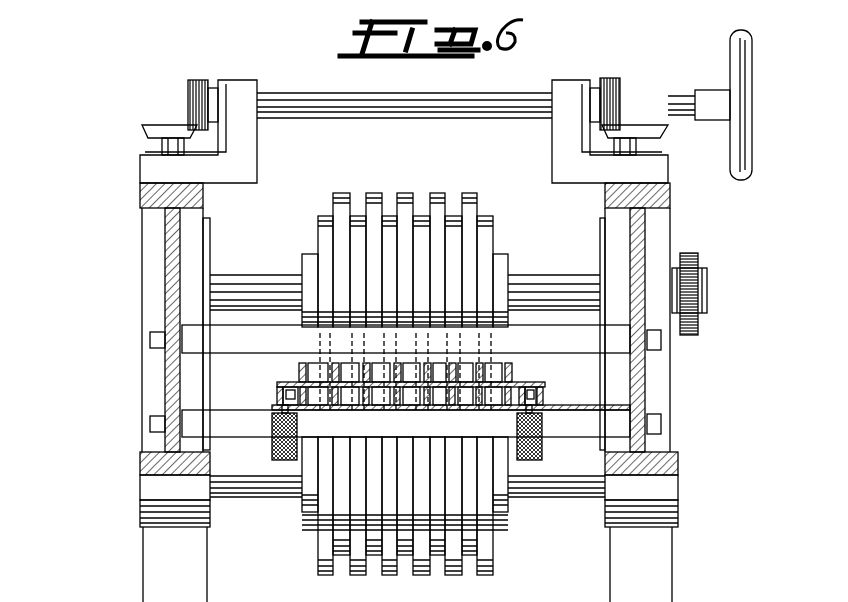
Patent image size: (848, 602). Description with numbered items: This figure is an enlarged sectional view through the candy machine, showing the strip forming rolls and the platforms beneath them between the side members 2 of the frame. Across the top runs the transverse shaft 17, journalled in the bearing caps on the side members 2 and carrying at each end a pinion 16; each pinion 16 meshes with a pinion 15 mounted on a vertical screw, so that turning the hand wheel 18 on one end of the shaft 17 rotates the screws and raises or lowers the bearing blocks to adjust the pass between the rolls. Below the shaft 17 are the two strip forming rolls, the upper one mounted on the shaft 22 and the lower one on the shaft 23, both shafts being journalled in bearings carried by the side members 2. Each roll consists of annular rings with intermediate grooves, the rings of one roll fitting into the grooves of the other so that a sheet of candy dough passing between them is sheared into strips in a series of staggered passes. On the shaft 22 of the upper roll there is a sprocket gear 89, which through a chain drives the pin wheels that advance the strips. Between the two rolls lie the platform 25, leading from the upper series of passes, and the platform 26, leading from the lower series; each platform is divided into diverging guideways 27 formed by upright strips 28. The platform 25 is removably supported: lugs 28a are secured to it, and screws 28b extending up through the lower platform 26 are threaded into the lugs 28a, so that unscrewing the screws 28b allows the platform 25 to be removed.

The side members 2 is at (168, 243).
The pinion 15 is at (150, 125).
The pinion 16 is at (205, 82).
The transverse shaft 17 is at (486, 100).
The hand wheel 18 is at (740, 30).
The shaft 22 is at (558, 288).
The shaft 23 is at (585, 482).
The platform 25 is at (532, 384).
The platform 26 is at (590, 410).
The guideways 27 is at (310, 363).
The upright strips 28 is at (300, 390).
The lugs 28a is at (283, 390).
The screws 28b is at (278, 440).
The sprocket gear 89 is at (700, 262).